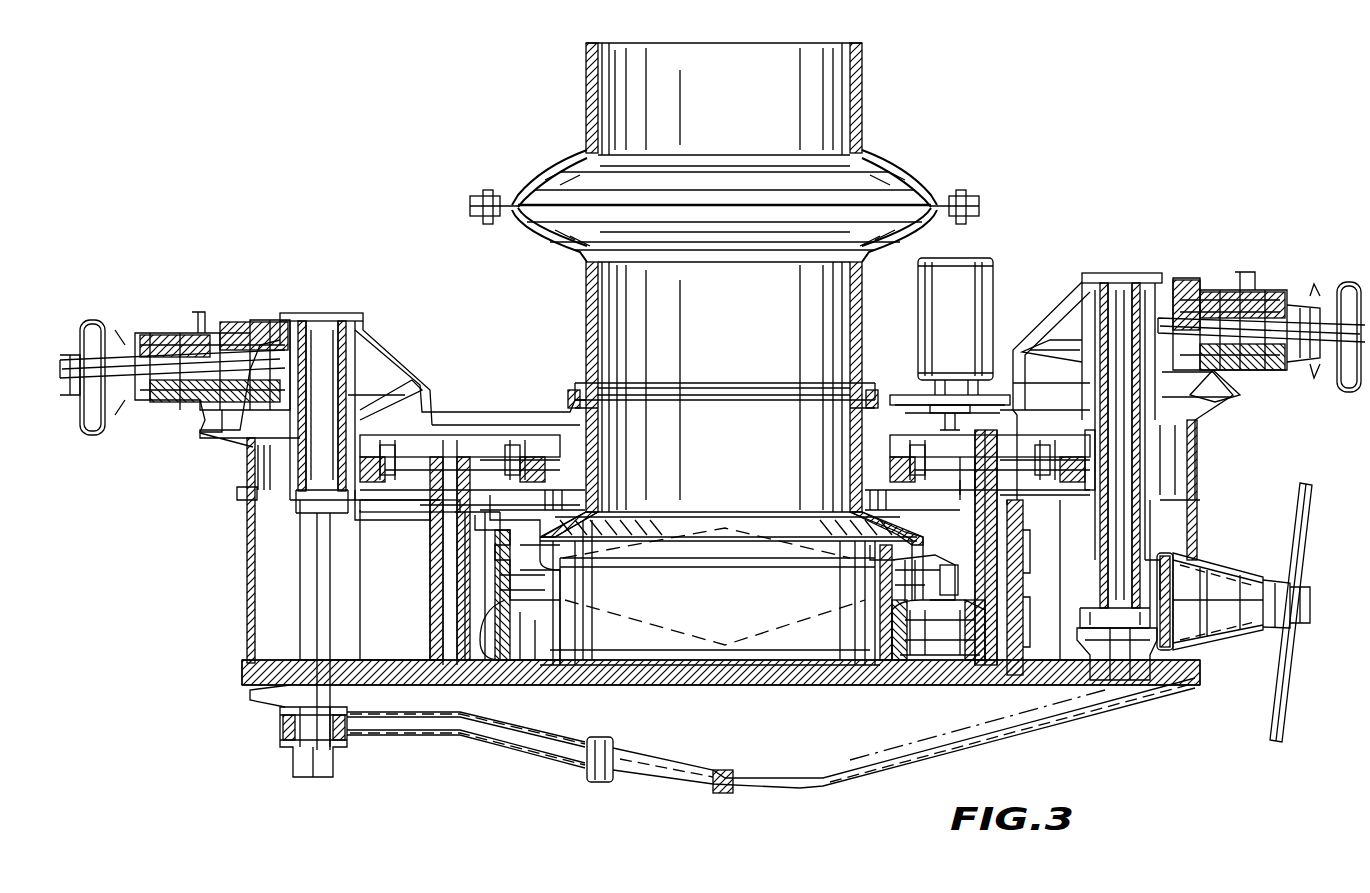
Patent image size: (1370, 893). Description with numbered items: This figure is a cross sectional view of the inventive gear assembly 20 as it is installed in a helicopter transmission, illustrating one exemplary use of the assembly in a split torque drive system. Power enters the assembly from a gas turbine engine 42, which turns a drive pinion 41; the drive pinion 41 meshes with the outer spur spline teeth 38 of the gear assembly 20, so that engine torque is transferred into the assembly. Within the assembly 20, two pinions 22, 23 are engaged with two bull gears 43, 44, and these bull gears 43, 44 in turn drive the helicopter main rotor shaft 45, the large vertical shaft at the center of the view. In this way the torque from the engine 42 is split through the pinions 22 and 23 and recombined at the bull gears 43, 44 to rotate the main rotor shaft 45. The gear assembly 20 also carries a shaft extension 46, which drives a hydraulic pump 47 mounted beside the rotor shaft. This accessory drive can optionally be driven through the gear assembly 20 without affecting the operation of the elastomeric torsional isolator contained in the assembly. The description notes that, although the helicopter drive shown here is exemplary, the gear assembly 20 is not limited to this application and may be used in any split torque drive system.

The gear assembly 20 is at (1046, 598).
The pinion 22 is at (1032, 548).
The pinion 23 is at (1061, 639).
The outer spur spline teeth 38 is at (1092, 440).
The drive pinion 41 is at (1150, 458).
The gas turbine engine 42 is at (1272, 297).
The bull gear 43 is at (885, 572).
The bull gear 44 is at (915, 622).
The helicopter main rotor shaft 45 is at (863, 336).
The shaft extension 46 is at (985, 445).
The hydraulic pump 47 is at (996, 284).